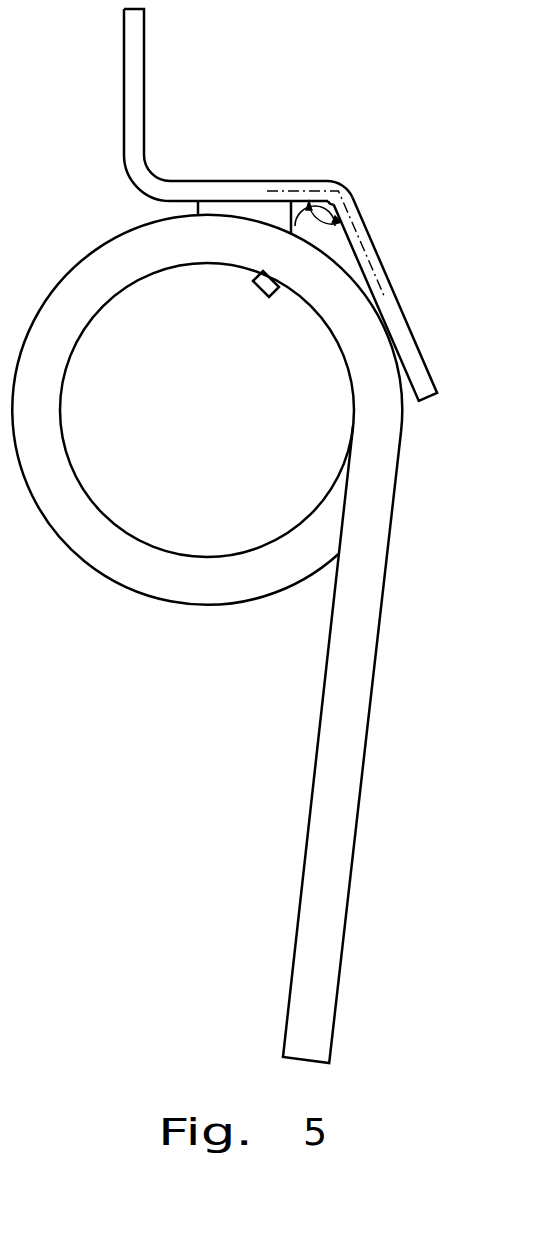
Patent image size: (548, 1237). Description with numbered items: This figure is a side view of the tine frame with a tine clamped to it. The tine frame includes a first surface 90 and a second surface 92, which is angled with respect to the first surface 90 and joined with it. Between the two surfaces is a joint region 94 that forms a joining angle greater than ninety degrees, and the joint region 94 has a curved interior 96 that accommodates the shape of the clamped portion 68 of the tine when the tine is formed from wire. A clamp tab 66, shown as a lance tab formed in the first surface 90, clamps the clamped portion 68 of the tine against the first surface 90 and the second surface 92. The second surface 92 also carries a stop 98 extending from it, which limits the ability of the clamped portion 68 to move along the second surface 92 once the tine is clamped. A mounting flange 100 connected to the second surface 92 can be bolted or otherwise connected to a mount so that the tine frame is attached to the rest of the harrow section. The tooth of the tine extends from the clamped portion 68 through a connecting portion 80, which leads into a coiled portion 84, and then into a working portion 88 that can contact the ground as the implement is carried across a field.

The mounting flange 100 is at (130, 61).
The stop 98 is at (223, 208).
The second surface 92 is at (310, 185).
The joint region 94 is at (341, 182).
The curved interior 96 is at (334, 203).
The connecting portion 80 is at (255, 205).
The first surface 90 is at (394, 290).
The clamped portion 68 is at (291, 203).
The clamp tab 66 is at (252, 292).
The coiled portion 84 is at (190, 598).
The working portion 88 is at (358, 752).